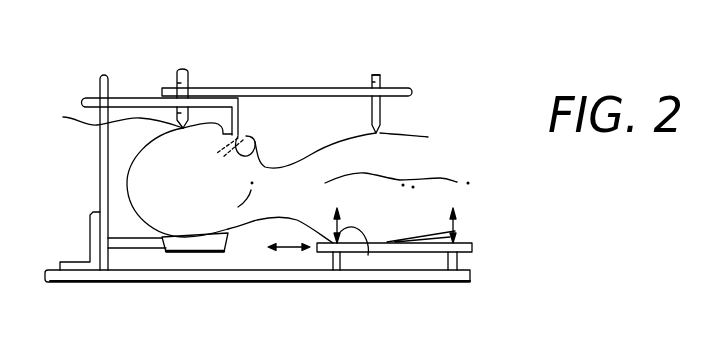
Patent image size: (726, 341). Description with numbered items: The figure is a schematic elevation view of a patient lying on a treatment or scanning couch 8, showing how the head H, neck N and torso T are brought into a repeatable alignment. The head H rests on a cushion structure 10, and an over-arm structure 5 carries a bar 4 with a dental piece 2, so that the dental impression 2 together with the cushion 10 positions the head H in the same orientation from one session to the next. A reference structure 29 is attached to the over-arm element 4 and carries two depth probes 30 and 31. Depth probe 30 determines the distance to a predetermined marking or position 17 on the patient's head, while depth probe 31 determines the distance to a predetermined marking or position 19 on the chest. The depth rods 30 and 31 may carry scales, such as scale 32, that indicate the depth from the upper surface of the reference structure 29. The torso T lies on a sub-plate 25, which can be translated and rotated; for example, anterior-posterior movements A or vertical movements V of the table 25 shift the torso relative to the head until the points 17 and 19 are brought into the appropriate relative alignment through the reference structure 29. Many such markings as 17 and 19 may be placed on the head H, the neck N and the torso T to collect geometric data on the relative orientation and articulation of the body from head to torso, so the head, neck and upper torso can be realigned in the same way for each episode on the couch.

The dental piece 2 is at (262, 137).
The bar 4 is at (143, 98).
The over-arm structure 5 is at (100, 160).
The treatment or scanning couch 8 is at (212, 277).
The cushion structure 10 is at (188, 248).
The marking or position on the head 17 is at (111, 117).
The marking or position on the chest 19 is at (387, 134).
The sub-plate 25 is at (413, 248).
The reference structure 29 is at (290, 88).
The depth probe 30 is at (188, 80).
The depth probe 31 is at (380, 80).
The scale 32 is at (372, 80).
The anterior-posterior movements A is at (368, 255).
The head H is at (148, 213).
The neck N is at (268, 213).
The torso T is at (428, 150).
The vertical movements V is at (288, 250).